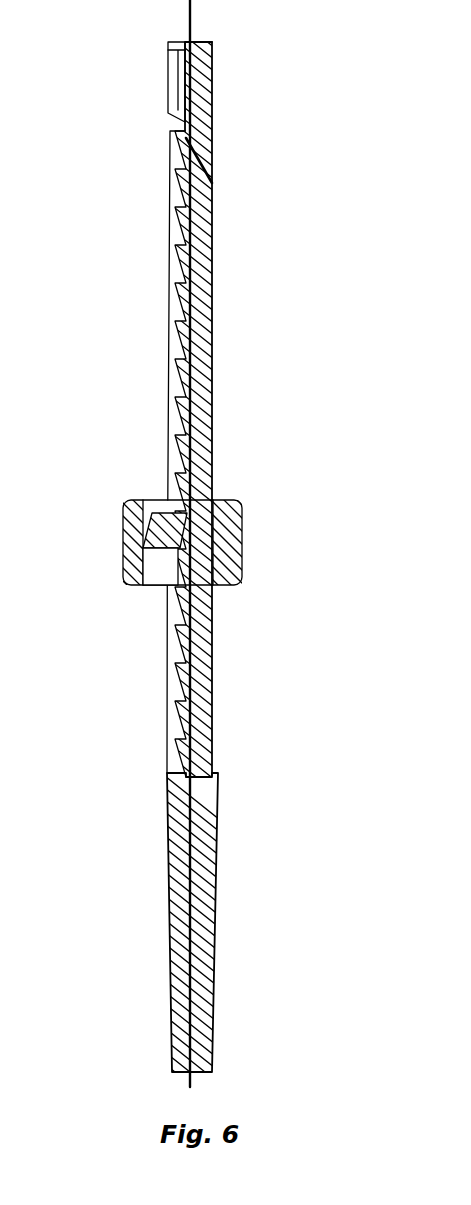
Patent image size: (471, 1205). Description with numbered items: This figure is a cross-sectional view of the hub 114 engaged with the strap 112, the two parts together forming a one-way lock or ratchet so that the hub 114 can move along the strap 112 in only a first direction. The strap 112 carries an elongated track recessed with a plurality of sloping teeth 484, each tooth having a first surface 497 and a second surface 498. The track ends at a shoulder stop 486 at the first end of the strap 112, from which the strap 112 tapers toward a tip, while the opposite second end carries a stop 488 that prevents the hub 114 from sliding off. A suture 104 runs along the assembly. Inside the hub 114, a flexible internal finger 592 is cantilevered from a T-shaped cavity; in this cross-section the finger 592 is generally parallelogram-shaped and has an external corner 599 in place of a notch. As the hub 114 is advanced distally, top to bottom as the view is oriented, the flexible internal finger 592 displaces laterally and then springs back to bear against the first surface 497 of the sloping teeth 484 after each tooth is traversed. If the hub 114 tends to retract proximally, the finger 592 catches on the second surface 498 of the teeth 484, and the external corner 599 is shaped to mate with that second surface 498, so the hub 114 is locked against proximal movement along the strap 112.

The suture 104 is at (190, 14).
The strap 112 is at (252, 222).
The hub 114 is at (125, 573).
The sloping teeth 484 is at (168, 380).
The shoulder stop 486 is at (167, 770).
The stop 488 is at (180, 63).
The first surface 497 is at (170, 300).
The second surface 498 is at (187, 337).
The flexible internal finger 592 is at (160, 502).
The external corner 599 is at (240, 513).